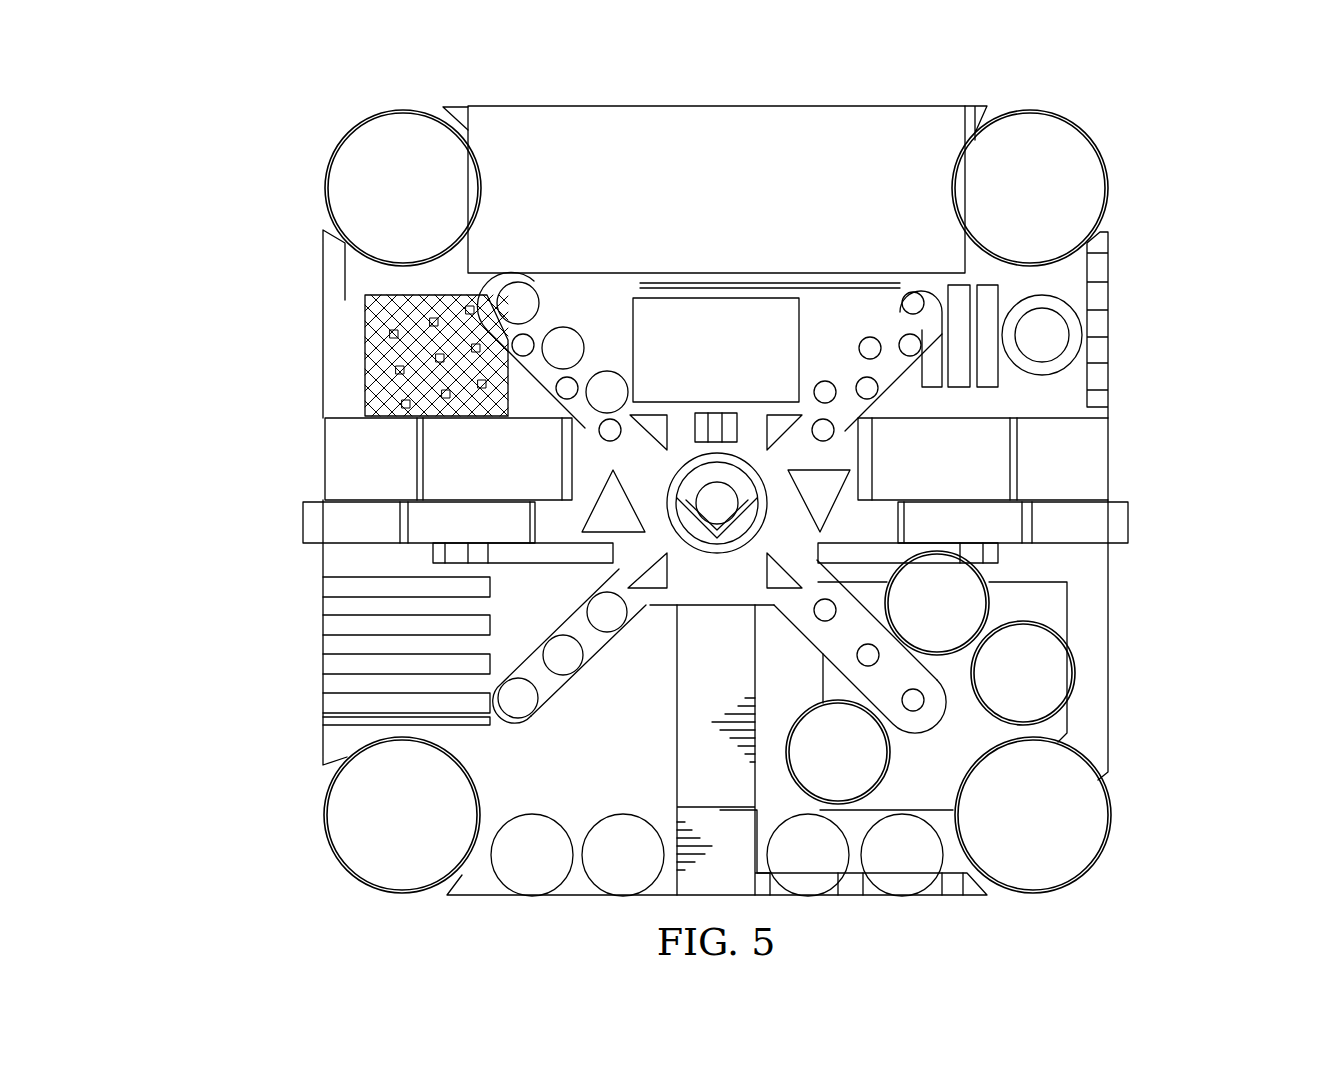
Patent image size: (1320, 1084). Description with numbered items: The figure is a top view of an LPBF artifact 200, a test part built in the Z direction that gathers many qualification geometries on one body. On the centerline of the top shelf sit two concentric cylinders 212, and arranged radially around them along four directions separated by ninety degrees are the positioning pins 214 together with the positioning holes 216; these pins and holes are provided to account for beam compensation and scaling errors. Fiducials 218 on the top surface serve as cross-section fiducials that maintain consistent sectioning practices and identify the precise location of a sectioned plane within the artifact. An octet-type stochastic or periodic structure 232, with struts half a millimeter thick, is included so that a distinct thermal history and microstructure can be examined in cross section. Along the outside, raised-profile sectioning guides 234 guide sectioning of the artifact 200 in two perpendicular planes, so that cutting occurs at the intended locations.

The artifact 200 is at (1121, 104).
The two concentric cylinders 212 is at (660, 479).
The positioning pins 214 is at (870, 338).
The positioning holes 216 is at (914, 348).
The fiducials 218 is at (848, 478).
The stochastic or periodic complex structures 232 is at (367, 328).
The sectioning guides 234 is at (615, 570).